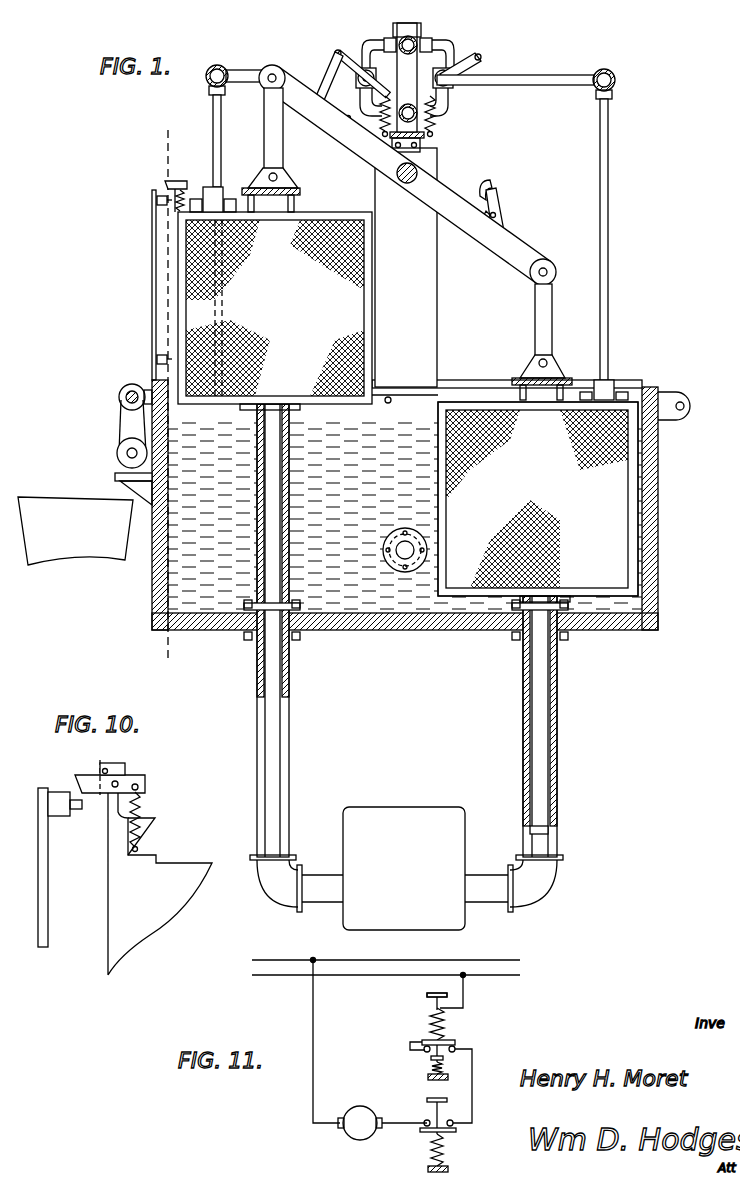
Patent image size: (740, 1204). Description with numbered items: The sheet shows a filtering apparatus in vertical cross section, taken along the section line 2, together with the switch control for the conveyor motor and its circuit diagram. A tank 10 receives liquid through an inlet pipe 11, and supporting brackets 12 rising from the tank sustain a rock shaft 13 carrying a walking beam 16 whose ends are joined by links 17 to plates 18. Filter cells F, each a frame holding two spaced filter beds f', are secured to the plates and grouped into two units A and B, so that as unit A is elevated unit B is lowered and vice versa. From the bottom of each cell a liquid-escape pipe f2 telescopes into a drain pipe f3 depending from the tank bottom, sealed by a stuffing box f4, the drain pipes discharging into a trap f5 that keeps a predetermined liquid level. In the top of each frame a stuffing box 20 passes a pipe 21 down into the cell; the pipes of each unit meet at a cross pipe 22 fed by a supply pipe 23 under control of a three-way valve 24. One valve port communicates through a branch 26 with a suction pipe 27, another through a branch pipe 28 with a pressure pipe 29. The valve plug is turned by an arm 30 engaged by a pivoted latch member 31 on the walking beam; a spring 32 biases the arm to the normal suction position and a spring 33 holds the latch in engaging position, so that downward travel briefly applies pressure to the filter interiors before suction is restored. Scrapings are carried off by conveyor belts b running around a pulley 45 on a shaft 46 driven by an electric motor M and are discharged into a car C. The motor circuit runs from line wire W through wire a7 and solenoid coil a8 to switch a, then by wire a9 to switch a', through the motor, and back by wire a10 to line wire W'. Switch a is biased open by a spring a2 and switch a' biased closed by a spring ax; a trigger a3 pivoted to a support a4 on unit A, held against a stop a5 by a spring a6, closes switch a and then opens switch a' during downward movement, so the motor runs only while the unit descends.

In FIG. 1, the section line 2 is at (160, 133).
In FIG. 1, the tank 10 is at (152, 565).
In FIG. 1, the inlet pipe 11 is at (412, 552).
In FIG. 1, the supporting brackets 12 is at (438, 304).
In FIG. 1, the rock shaft 13 is at (405, 184).
In FIG. 1, the walking beam 16 is at (516, 246).
In FIG. 1, the links 17 is at (264, 150).
In FIG. 1, the plates 18 is at (268, 200).
In FIG. 1, the stuffing box 20 is at (216, 213).
In FIG. 1, the pipe 21 is at (213, 135).
In FIG. 1, the cross pipe 22 is at (217, 66).
In FIG. 1, the supply pipe 23 is at (248, 72).
In FIG. 1, the three-way valve 24 is at (362, 66).
In FIG. 1, the branch 26 is at (366, 66).
In FIG. 1, the suction pipe 27 is at (405, 174).
In FIG. 1, the branch pipe 28 is at (452, 46).
In FIG. 1, the pressure pipe 29 is at (413, 40).
In FIG. 1, the arm 30 is at (336, 50).
In FIG. 1, the latch member 31 is at (318, 70).
In FIG. 1, the spring 32 is at (384, 124).
In FIG. 1, the spring 33 is at (324, 118).
In FIG. 1, the pulley 45 is at (126, 386).
In FIG. 1, the shaft 46 is at (118, 397).
In FIG. 1, the filter unit A is at (168, 282).
In FIG. 1, the filter unit B is at (632, 498).
In FIG. 1, the car C is at (46, 516).
In FIG. 1, the filter cell F is at (408, 407).
In FIG. 1, the filter beds f' is at (438, 404).
In FIG. 1, the liquid-escape pipe f2 is at (272, 420).
In FIG. 1, the drain pipe f3 is at (274, 727).
In FIG. 1, the stuffing box f4 is at (247, 640).
In FIG. 1, the trap f5 is at (404, 868).
In FIG. 1, the electric motor M is at (116, 454).
In FIG. 11, the electric motor M is at (382, 1123).
In FIG. 1, the conveyor belts b is at (440, 388).
In FIG. 1, the switch a is at (137, 211).
In FIG. 10, the switch a is at (60, 867).
In FIG. 11, the switch a is at (415, 1001).
In FIG. 1, the switch a' is at (142, 346).
In FIG. 11, the switch a' is at (414, 1139).
In FIG. 11, the spring a2 is at (426, 1064).
In FIG. 1, the trigger a3 is at (181, 182).
In FIG. 10, the trigger a3 is at (128, 782).
In FIG. 1, the support a4 is at (176, 206).
In FIG. 10, the support a4 is at (110, 843).
In FIG. 10, the stop a5 is at (104, 770).
In FIG. 10, the spring a6 is at (143, 822).
In FIG. 11, the wire a7 is at (470, 995).
In FIG. 11, the solenoid coil a8 is at (458, 1024).
In FIG. 11, the wire a9 is at (478, 1064).
In FIG. 11, the wire a10 is at (312, 1108).
In FIG. 11, the spring ax is at (452, 1168).
In FIG. 11, the line wire W is at (380, 976).
In FIG. 11, the line wire W' is at (376, 952).